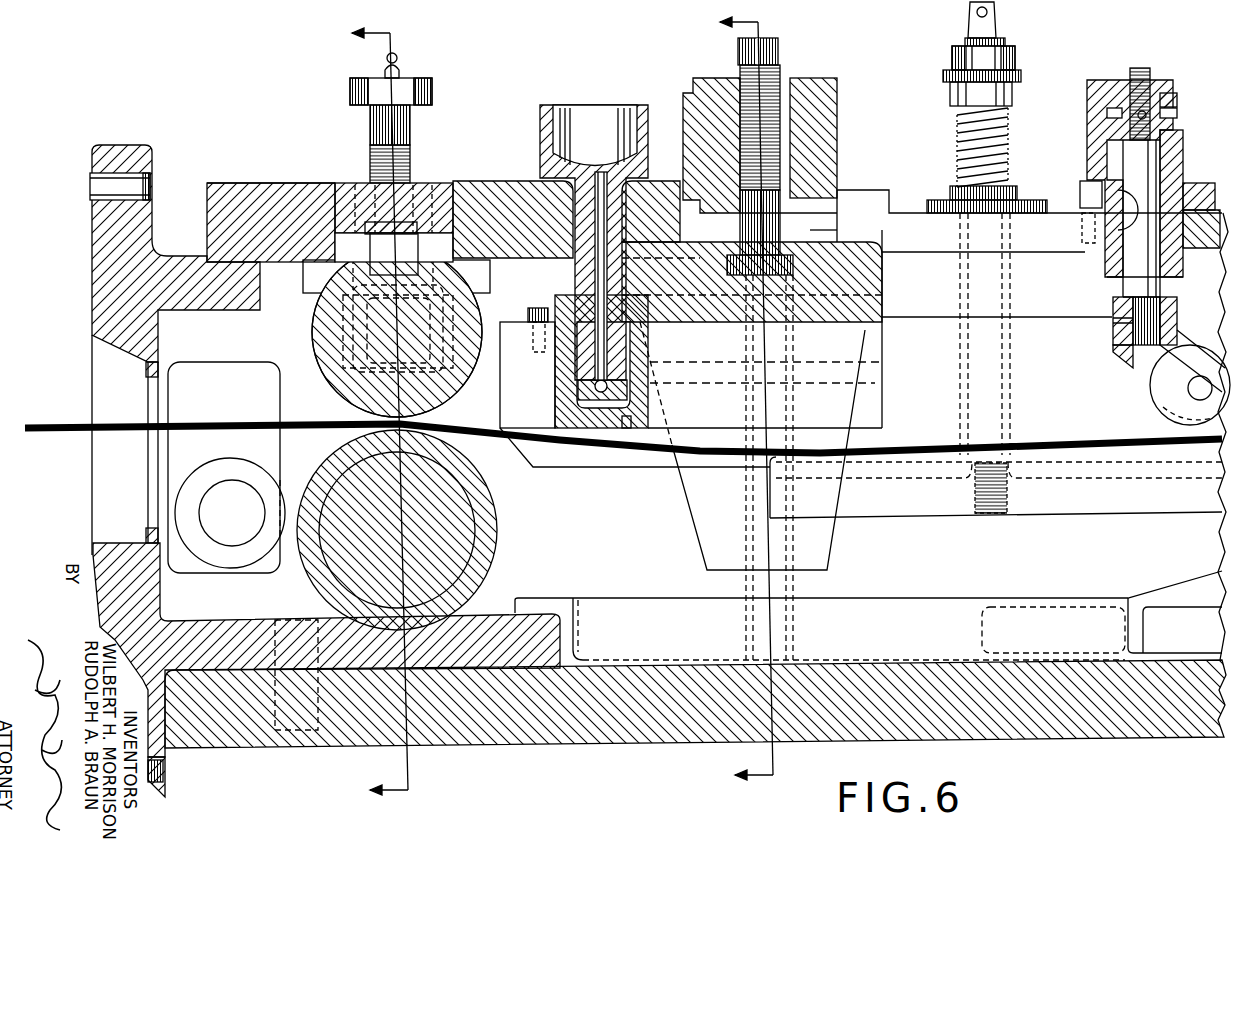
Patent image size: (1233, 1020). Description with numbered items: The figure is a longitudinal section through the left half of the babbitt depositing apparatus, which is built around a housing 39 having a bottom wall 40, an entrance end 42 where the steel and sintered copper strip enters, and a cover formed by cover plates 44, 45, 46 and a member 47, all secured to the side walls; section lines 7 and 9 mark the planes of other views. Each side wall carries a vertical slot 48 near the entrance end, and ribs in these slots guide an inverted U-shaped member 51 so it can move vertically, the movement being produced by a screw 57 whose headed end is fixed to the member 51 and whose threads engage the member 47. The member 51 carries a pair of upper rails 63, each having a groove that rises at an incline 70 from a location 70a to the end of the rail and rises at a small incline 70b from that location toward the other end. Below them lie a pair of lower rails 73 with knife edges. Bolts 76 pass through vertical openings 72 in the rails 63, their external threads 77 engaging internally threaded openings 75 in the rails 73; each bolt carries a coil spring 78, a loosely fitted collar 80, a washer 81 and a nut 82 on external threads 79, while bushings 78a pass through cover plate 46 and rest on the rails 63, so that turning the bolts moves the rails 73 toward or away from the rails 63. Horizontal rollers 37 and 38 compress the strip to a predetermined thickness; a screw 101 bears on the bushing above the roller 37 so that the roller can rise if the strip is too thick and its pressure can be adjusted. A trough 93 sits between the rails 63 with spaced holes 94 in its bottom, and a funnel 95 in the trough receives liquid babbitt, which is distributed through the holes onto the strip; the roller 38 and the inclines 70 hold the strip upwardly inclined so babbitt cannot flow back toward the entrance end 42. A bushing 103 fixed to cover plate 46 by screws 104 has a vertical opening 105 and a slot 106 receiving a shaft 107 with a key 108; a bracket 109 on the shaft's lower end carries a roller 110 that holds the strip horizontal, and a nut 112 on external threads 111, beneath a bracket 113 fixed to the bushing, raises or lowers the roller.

The section line 7- 7 is at (734, 399).
The section line 9- 9 is at (369, 412).
The roller 37 is at (318, 327).
The roller 38 is at (325, 578).
The housing 39 is at (210, 181).
The bottom wall 40 is at (518, 735).
The entrance end 42 is at (103, 372).
The cover plate 44 is at (283, 195).
The cover plate 45 is at (477, 193).
The cover plate 46 is at (1060, 236).
The member 47 is at (823, 117).
The slot 48 is at (749, 548).
The inverted U-shaped member 51 is at (853, 236).
The screw 57 is at (768, 64).
The rails 63 is at (898, 335).
The incline 70 is at (613, 452).
The location 70a is at (730, 476).
The small incline 70b is at (958, 449).
The vertically disposed openings 72 is at (1012, 372).
The rails 73 is at (924, 503).
The internally threaded openings 75 is at (1000, 515).
The bolts 76 is at (968, 18).
The external threads 77 is at (1010, 484).
The coil spring 78 is at (958, 129).
The bushings 78a is at (952, 193).
The external threads 79 is at (998, 43).
The collars 80 is at (958, 97).
The washer 81 is at (948, 77).
The nut 82 is at (957, 54).
The trough 93 is at (568, 388).
The holes 94 is at (636, 421).
The funnel 95 is at (643, 105).
The screw 101 is at (402, 127).
The bushing 103 is at (1195, 197).
The screws 104 is at (1087, 193).
The vertically disposed opening 105 is at (1160, 268).
The slot 106 is at (1120, 150).
The shaft 107 is at (1145, 160).
The key 108 is at (1148, 162).
The bracket 109 is at (1122, 343).
The roller 110 is at (1156, 413).
The external threads 111 is at (1147, 80).
The nut 112 is at (1173, 101).
The bracket 113 is at (1108, 88).